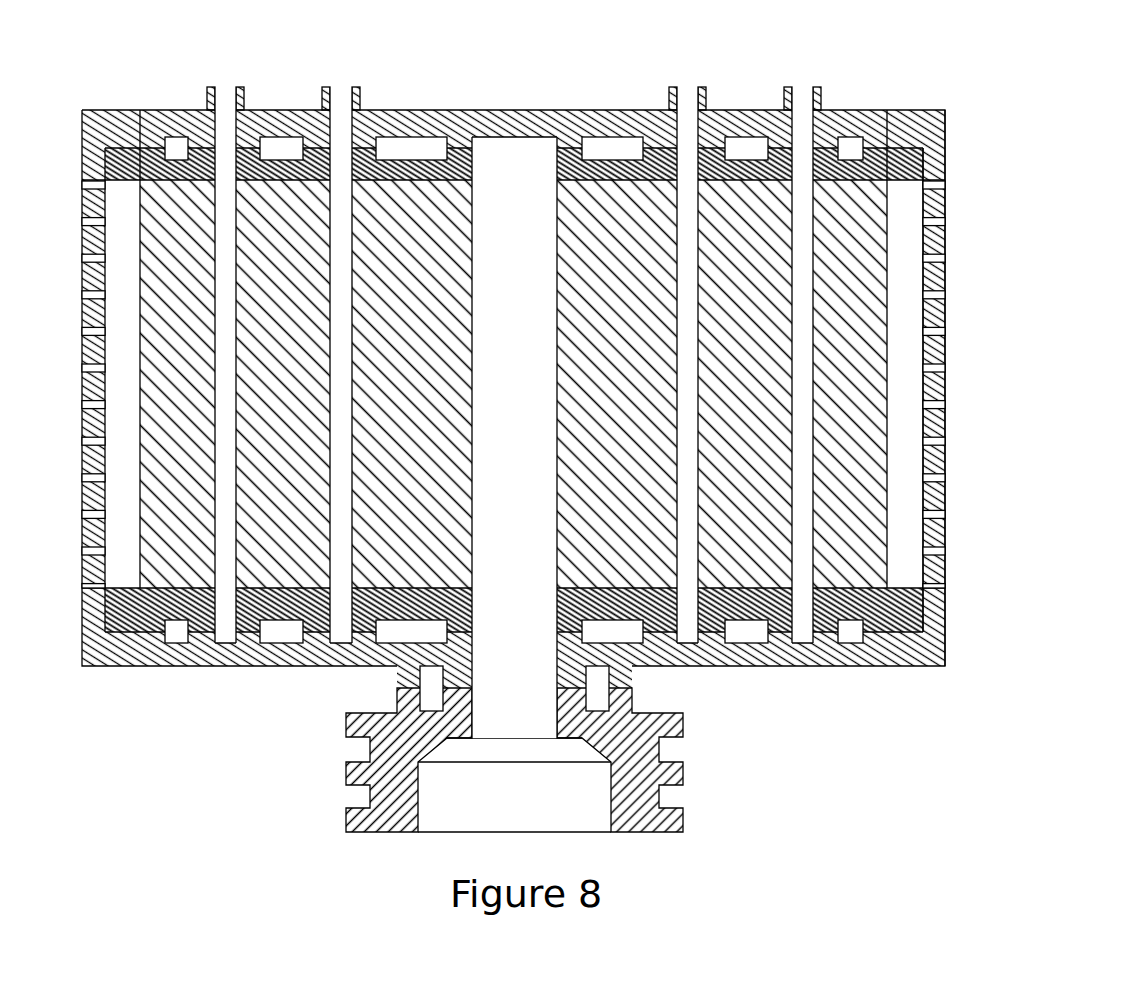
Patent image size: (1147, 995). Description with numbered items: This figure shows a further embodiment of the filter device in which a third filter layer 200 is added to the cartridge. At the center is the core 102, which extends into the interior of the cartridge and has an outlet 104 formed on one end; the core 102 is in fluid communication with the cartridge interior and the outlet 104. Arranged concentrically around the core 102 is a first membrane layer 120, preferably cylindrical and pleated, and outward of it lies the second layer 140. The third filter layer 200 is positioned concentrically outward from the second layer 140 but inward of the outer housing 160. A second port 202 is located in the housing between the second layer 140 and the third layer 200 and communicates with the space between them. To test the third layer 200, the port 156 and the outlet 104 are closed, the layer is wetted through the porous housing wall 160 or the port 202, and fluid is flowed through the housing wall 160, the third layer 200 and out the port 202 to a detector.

The core 102 is at (512, 308).
The outlet 104 is at (553, 805).
The first membrane layer 120 is at (612, 270).
The second layer 140 is at (737, 237).
The port 156 is at (340, 117).
The outer housing 160 is at (947, 380).
The third filter layer 200 is at (853, 316).
The second port 202 is at (227, 123).